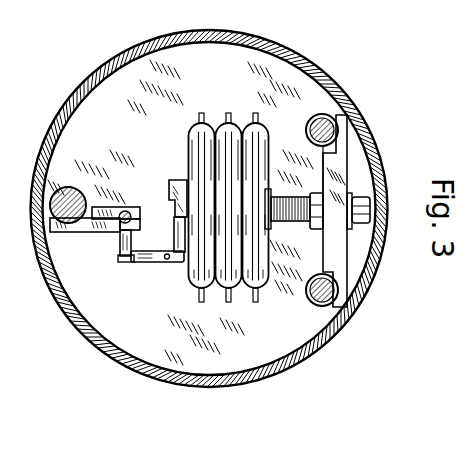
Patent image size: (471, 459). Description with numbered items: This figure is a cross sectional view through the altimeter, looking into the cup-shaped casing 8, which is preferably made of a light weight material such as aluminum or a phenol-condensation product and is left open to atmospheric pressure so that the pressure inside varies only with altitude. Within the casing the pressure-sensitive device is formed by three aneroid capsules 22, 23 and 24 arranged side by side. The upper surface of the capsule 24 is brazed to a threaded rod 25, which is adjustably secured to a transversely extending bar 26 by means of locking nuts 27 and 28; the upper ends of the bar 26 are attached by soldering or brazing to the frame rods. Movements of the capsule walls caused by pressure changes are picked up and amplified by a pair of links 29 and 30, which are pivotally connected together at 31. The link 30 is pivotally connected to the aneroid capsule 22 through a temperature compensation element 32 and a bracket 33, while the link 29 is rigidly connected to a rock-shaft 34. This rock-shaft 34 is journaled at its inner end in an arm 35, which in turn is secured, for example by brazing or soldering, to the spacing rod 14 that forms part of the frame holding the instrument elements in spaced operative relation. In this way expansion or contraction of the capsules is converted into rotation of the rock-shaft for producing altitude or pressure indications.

The casing 8 is at (280, 368).
The spacing rod 14 is at (68, 187).
The aneroid capsule 22 is at (196, 284).
The aneroid capsule 23 is at (229, 295).
The aneroid capsule 24 is at (262, 293).
The threaded rod 25 is at (307, 131).
The transversely extending bar 26 is at (348, 236).
The locking nut 27 is at (350, 196).
The locking nut 28 is at (317, 230).
The link 29 is at (120, 246).
The link 30 is at (158, 262).
The pivot connection 31 is at (126, 262).
The temperature compensation element 32 is at (174, 236).
The bracket 33 is at (176, 180).
The rock-shaft 34 is at (127, 211).
The arm 35 is at (84, 232).